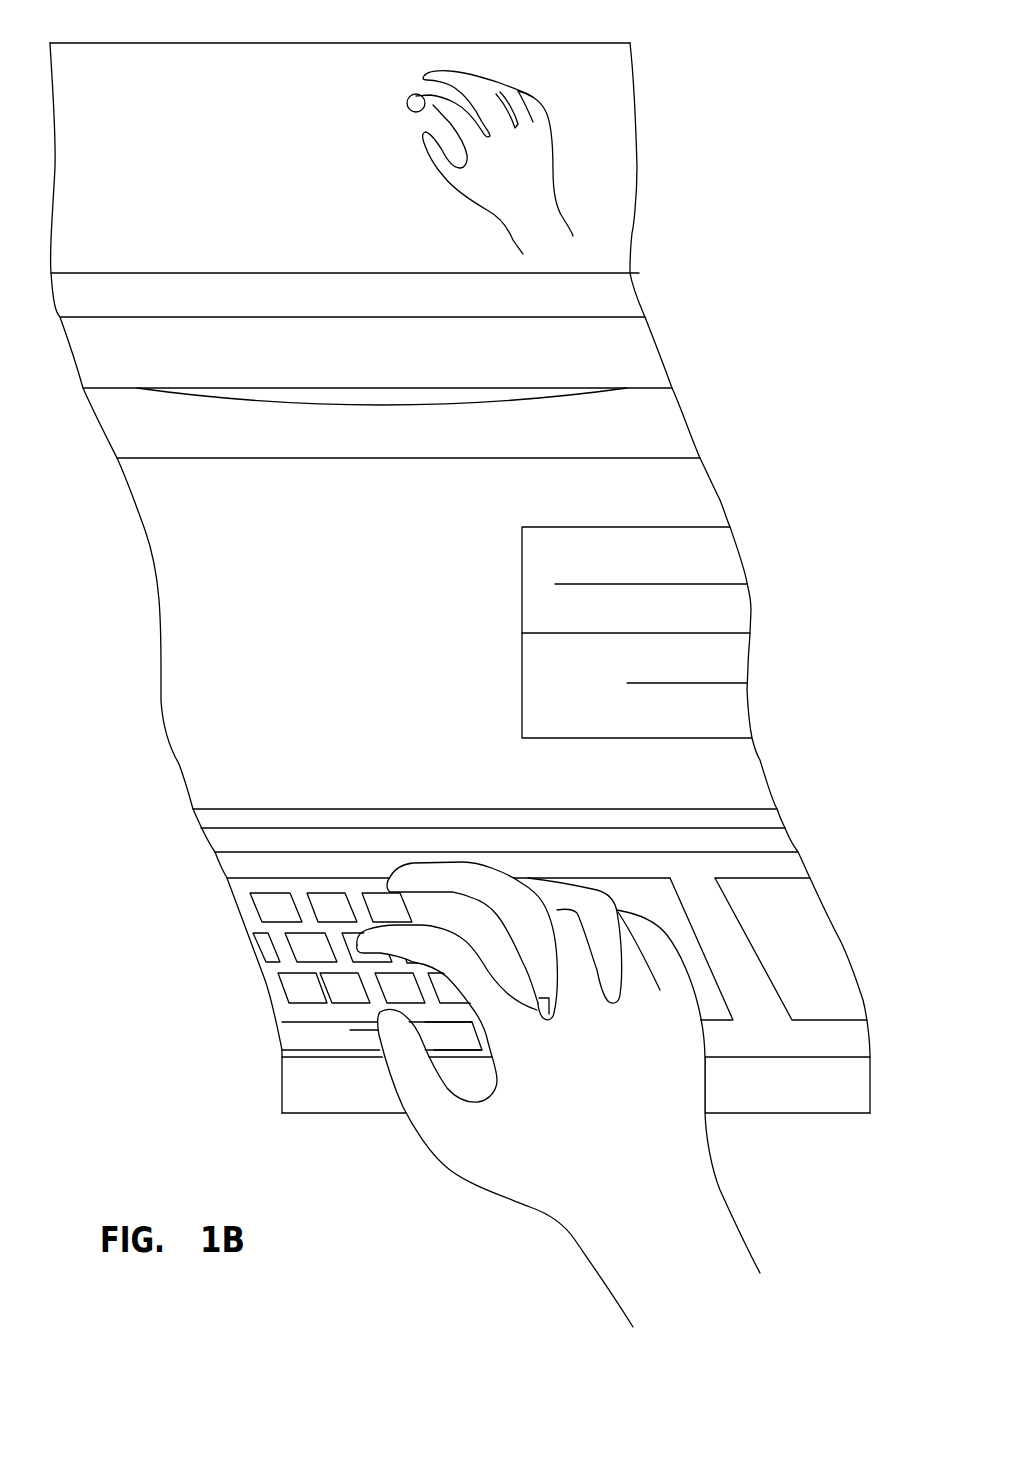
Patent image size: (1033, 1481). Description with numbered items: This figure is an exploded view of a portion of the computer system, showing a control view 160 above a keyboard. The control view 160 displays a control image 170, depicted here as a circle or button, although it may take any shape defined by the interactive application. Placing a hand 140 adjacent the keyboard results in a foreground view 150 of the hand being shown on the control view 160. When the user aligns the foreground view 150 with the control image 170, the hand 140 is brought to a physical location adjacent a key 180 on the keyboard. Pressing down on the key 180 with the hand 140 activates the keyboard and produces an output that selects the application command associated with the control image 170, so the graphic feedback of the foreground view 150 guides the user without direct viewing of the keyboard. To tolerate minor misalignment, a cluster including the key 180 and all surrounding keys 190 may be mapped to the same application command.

The hand 140 is at (492, 1193).
The foreground view 150 is at (423, 160).
The control view 160 is at (262, 43).
The control image 170 is at (406, 101).
The key 180 is at (352, 957).
The surrounding keys 190 is at (307, 943).